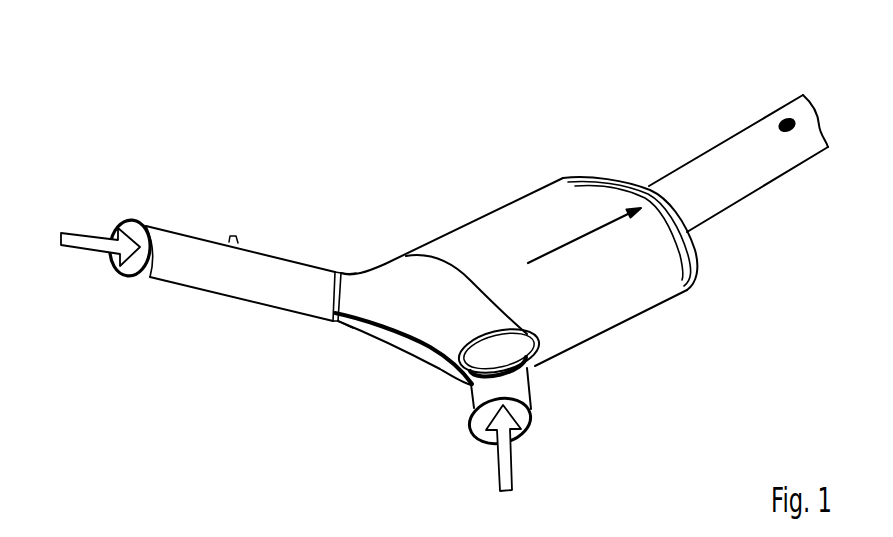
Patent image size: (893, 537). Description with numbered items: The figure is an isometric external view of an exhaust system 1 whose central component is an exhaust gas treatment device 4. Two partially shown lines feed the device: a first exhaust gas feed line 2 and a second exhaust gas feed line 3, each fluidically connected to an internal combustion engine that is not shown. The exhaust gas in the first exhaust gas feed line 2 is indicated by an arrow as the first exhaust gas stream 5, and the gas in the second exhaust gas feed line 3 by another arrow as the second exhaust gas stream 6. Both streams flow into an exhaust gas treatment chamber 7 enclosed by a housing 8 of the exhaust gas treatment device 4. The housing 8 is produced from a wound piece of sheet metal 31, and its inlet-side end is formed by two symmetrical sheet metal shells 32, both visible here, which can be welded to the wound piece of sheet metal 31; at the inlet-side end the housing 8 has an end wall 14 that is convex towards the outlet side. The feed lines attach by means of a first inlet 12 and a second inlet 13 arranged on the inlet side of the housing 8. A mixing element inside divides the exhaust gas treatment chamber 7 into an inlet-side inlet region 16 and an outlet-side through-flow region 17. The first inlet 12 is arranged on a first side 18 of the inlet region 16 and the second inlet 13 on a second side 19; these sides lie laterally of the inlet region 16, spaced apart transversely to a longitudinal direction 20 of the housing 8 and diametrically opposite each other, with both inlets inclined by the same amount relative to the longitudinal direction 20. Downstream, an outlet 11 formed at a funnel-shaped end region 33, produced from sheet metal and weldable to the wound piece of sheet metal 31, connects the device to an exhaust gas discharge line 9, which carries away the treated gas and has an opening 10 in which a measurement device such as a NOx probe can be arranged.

The exhaust system 1 is at (245, 118).
The first exhaust gas feed line 2 is at (465, 405).
The second exhaust gas feed line 3 is at (205, 295).
The exhaust gas treatment device 4 is at (530, 178).
The first exhaust gas stream 5 is at (500, 466).
The second exhaust gas stream 6 is at (85, 245).
The exhaust gas treatment chamber 7 is at (507, 232).
The housing 8 is at (612, 338).
The exhaust gas discharge line 9 is at (758, 207).
The opening 10 is at (787, 118).
The outlet 11 is at (648, 188).
The first inlet 12 is at (497, 366).
The second inlet 13 is at (333, 280).
The end wall 14 is at (389, 311).
The inlet region 16 is at (440, 328).
The through-flow region 17 is at (555, 325).
The first side 18 is at (480, 333).
The second side 19 is at (351, 294).
The longitudinal direction 20 is at (588, 238).
The wound piece of sheet metal 31 is at (635, 290).
The sheet metal shells 32 is at (412, 275).
The funnel-shaped end region 33 is at (645, 191).